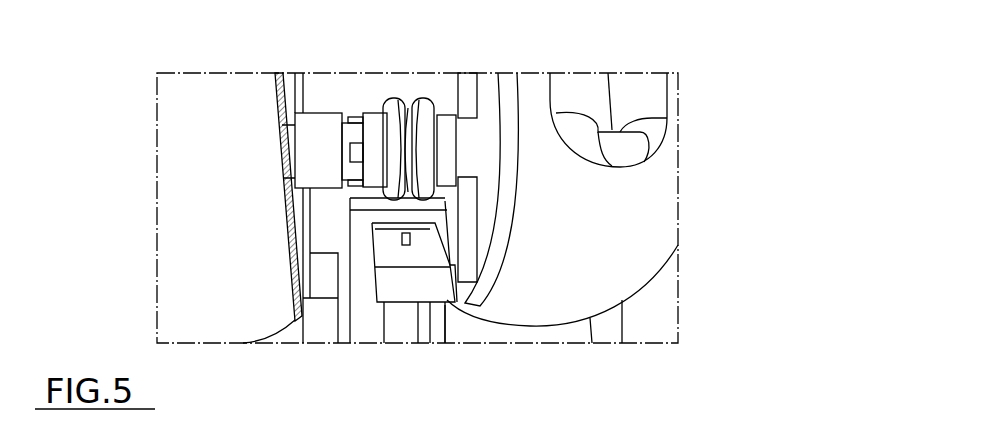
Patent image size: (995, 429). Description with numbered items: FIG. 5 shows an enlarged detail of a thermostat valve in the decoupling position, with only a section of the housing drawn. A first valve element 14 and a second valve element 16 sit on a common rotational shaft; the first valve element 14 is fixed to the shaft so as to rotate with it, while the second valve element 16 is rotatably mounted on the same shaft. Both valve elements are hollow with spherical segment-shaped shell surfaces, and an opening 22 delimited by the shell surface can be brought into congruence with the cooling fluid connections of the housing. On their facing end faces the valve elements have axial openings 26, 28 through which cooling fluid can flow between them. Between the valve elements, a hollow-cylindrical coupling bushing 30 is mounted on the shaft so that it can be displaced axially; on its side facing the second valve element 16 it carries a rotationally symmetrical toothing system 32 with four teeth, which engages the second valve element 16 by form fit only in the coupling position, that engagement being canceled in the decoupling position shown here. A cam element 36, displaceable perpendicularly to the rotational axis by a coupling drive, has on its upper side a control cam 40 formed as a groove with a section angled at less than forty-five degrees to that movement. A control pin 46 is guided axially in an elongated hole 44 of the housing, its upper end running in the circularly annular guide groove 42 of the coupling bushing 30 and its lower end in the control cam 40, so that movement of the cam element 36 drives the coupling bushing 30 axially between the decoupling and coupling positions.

The first valve element 14 is at (663, 186).
The second valve element 16 is at (198, 175).
The opening 22 is at (553, 97).
The axial opening 26 is at (492, 95).
The axial opening 28 is at (298, 90).
The coupling bushing 30 is at (377, 118).
The toothing system 32 is at (358, 121).
The cam element 36 is at (423, 290).
The control cam 40 is at (405, 250).
The guide groove 42 is at (410, 105).
The elongated hole 44 is at (407, 200).
The control pin 46 is at (430, 103).